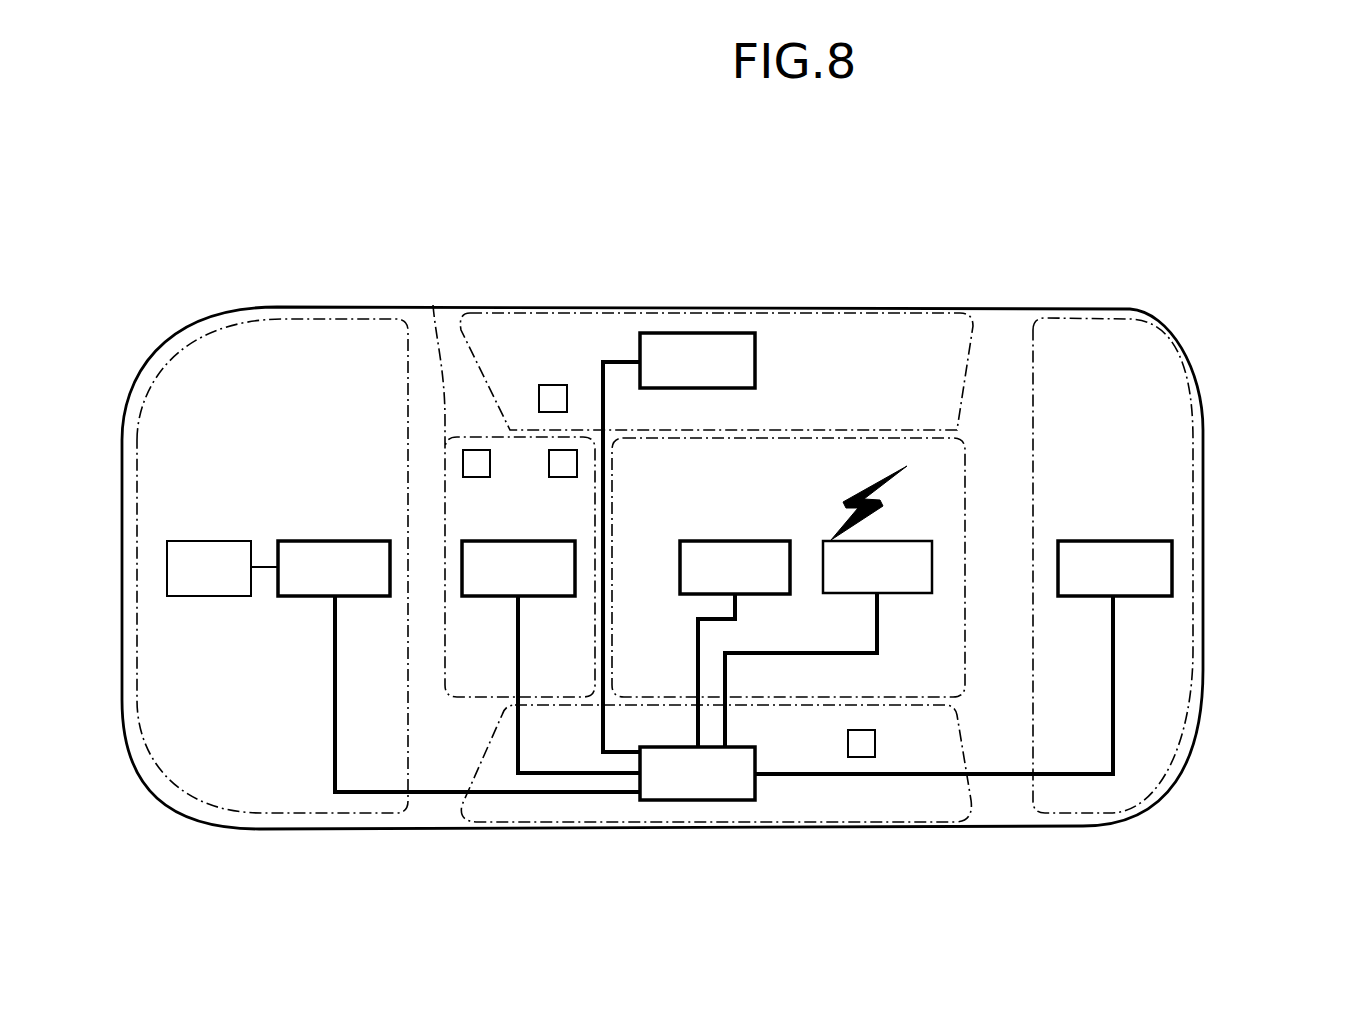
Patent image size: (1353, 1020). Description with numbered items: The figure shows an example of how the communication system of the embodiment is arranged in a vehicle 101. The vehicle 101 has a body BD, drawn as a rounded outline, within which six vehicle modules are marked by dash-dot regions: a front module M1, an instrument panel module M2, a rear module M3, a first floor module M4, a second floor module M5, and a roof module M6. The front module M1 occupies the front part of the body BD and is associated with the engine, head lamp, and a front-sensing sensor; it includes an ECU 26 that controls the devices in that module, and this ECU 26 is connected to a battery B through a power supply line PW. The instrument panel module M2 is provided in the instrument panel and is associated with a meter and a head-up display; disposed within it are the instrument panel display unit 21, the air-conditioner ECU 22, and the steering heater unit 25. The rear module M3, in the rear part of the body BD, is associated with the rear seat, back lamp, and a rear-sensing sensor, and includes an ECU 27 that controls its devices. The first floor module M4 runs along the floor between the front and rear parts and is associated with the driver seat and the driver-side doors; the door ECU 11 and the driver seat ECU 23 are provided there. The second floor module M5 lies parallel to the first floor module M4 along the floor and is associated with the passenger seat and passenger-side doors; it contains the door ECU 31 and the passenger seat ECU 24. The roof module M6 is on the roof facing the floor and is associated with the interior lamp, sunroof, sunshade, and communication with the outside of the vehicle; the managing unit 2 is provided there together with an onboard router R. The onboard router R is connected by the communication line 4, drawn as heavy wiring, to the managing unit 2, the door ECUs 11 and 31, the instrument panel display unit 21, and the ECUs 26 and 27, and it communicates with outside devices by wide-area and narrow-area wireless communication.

The vehicle 101 is at (1246, 310).
The body BD is at (1155, 330).
The front module M1 is at (343, 320).
The instrument panel module M2 is at (433, 305).
The rear module M3 is at (1158, 357).
The first floor module M4 is at (543, 313).
The second floor module M5 is at (927, 823).
The roof module M6 is at (966, 482).
The battery B is at (227, 541).
The power supply line PW is at (263, 566).
The managing unit 2 is at (700, 541).
The communication line 4 is at (601, 372).
The door ECU 11 is at (730, 333).
The instrument panel display unit 21 is at (516, 541).
The air-conditioner ECU 22 is at (463, 462).
The driver seat ECU 23 is at (540, 392).
The passenger seat ECU 24 is at (876, 740).
The steering heater unit 25 is at (577, 462).
The ECU 26 is at (335, 541).
The ECU 27 is at (1112, 541).
The door ECU 31 is at (757, 755).
The onboard router R is at (918, 541).